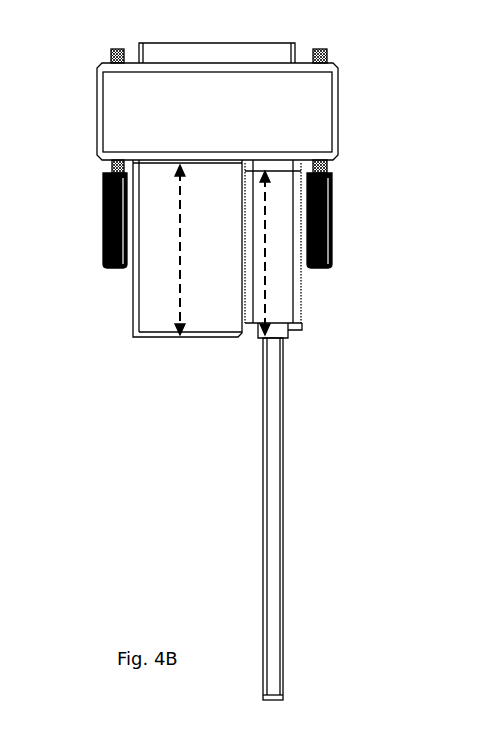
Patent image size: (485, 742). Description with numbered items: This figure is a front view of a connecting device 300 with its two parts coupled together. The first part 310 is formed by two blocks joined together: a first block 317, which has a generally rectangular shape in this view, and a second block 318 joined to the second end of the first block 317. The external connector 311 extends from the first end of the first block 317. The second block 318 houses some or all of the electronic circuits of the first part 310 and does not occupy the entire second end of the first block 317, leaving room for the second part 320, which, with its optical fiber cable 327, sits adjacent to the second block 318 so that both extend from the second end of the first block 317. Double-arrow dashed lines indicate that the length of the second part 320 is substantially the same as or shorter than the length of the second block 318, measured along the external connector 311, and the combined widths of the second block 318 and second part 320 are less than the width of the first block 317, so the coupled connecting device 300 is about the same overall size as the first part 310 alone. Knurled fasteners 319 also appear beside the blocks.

The connecting device 300 is at (383, 132).
The first part 310 is at (62, 173).
The external connector 311 is at (257, 50).
The first block 317 is at (113, 122).
The second block 318 is at (153, 301).
The thumb screw knobs 319 is at (332, 210).
The second part 320 is at (285, 290).
The optical fiber cable 327 is at (278, 503).